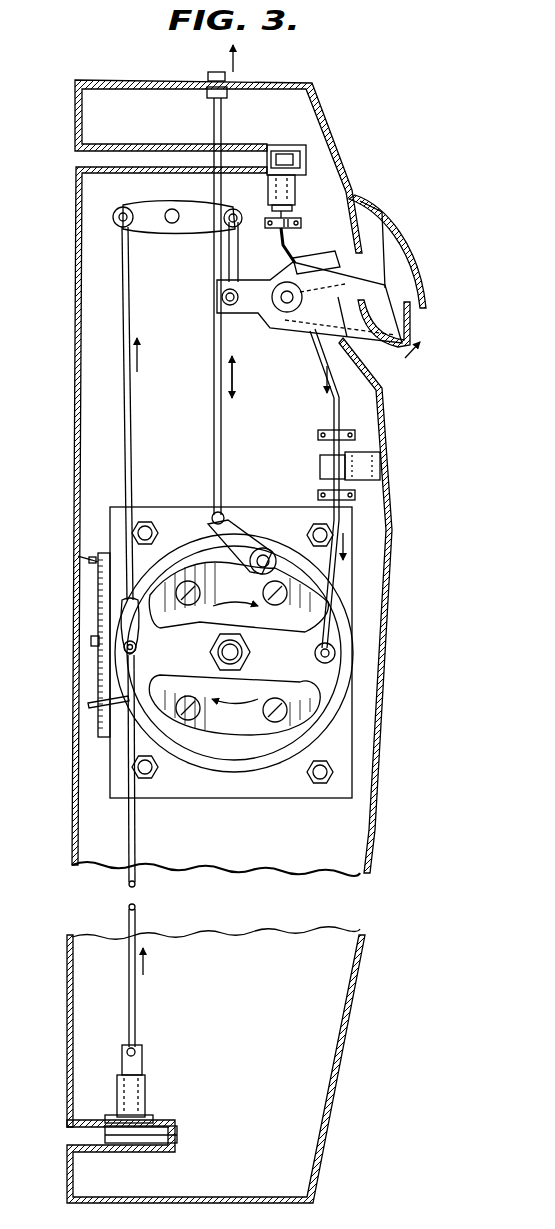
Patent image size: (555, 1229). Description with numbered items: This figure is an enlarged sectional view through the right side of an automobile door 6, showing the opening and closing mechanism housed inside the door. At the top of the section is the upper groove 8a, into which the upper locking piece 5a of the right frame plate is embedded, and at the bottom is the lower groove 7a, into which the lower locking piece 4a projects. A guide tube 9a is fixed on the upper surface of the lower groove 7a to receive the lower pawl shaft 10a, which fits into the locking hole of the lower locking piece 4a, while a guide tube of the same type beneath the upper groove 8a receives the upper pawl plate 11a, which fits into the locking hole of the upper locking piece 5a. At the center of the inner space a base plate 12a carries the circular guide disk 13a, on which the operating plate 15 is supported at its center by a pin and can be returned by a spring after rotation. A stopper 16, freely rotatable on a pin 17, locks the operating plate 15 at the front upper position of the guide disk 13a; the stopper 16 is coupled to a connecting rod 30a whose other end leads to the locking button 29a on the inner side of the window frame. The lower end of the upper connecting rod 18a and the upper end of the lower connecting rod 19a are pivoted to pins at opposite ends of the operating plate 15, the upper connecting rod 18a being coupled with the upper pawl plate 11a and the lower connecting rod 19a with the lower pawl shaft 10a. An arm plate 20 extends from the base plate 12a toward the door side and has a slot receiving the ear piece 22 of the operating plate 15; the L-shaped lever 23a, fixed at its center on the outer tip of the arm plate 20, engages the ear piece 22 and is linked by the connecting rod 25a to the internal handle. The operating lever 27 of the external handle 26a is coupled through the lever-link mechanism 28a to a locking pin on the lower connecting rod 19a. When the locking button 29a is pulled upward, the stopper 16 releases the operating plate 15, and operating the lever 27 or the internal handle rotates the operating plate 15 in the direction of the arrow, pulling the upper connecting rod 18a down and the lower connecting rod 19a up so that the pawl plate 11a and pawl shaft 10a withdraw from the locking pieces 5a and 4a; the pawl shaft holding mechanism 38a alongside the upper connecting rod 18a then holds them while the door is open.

The lower locking piece 4a is at (178, 1138).
The upper locking piece 5a is at (290, 162).
The door 6 is at (240, 641).
The lower groove 7a is at (100, 1153).
The upper groove 8a is at (157, 156).
The guide tube 9a is at (147, 1097).
The lower pawl shaft 10a is at (142, 1050).
The upper pawl plate 11a is at (293, 207).
The base plate 12a is at (352, 716).
The circular guide disk 13a is at (340, 735).
The operating plate 15 is at (238, 603).
The stopper 16 is at (212, 556).
The pin 17 is at (263, 547).
The upper connecting rod 18a is at (313, 352).
The lower connecting rod 19a is at (143, 878).
The arm plate 20 is at (105, 738).
The ear piece 22 is at (92, 706).
The L-shaped lever 23a is at (95, 613).
The connecting rod 25a is at (88, 560).
The external handle 26a is at (426, 258).
The operating lever 27 is at (414, 323).
The lever-link mechanism 28a is at (127, 308).
The locking button 29a is at (208, 74).
The connecting rod 30a is at (222, 128).
The pawl shaft holding mechanism 38a is at (322, 468).